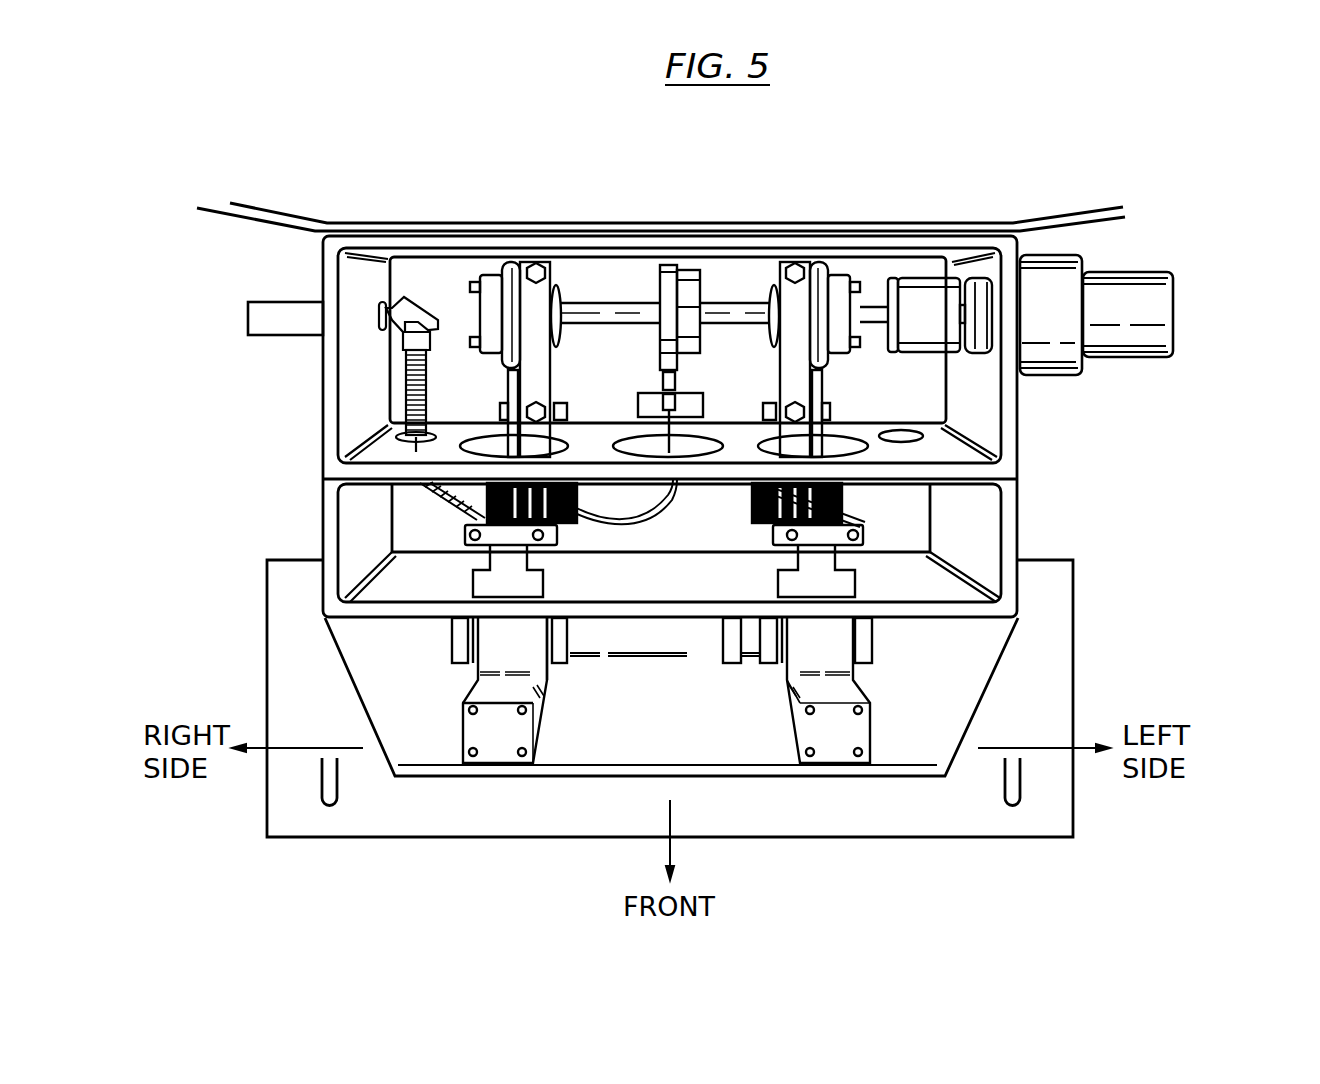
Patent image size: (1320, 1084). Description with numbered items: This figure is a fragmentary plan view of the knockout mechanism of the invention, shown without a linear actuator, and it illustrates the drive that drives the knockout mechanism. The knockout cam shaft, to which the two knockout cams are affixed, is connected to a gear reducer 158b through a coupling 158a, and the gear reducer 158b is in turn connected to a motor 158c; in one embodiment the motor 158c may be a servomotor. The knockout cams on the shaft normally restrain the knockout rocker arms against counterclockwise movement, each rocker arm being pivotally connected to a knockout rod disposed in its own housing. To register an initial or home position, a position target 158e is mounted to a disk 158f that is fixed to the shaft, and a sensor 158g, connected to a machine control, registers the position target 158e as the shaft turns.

The coupling 158a is at (927, 267).
The gear reducer 158b is at (1052, 377).
The motor 158c is at (1150, 360).
The position target 158e is at (677, 378).
The disk 158f is at (667, 267).
The sensor 158g is at (656, 393).